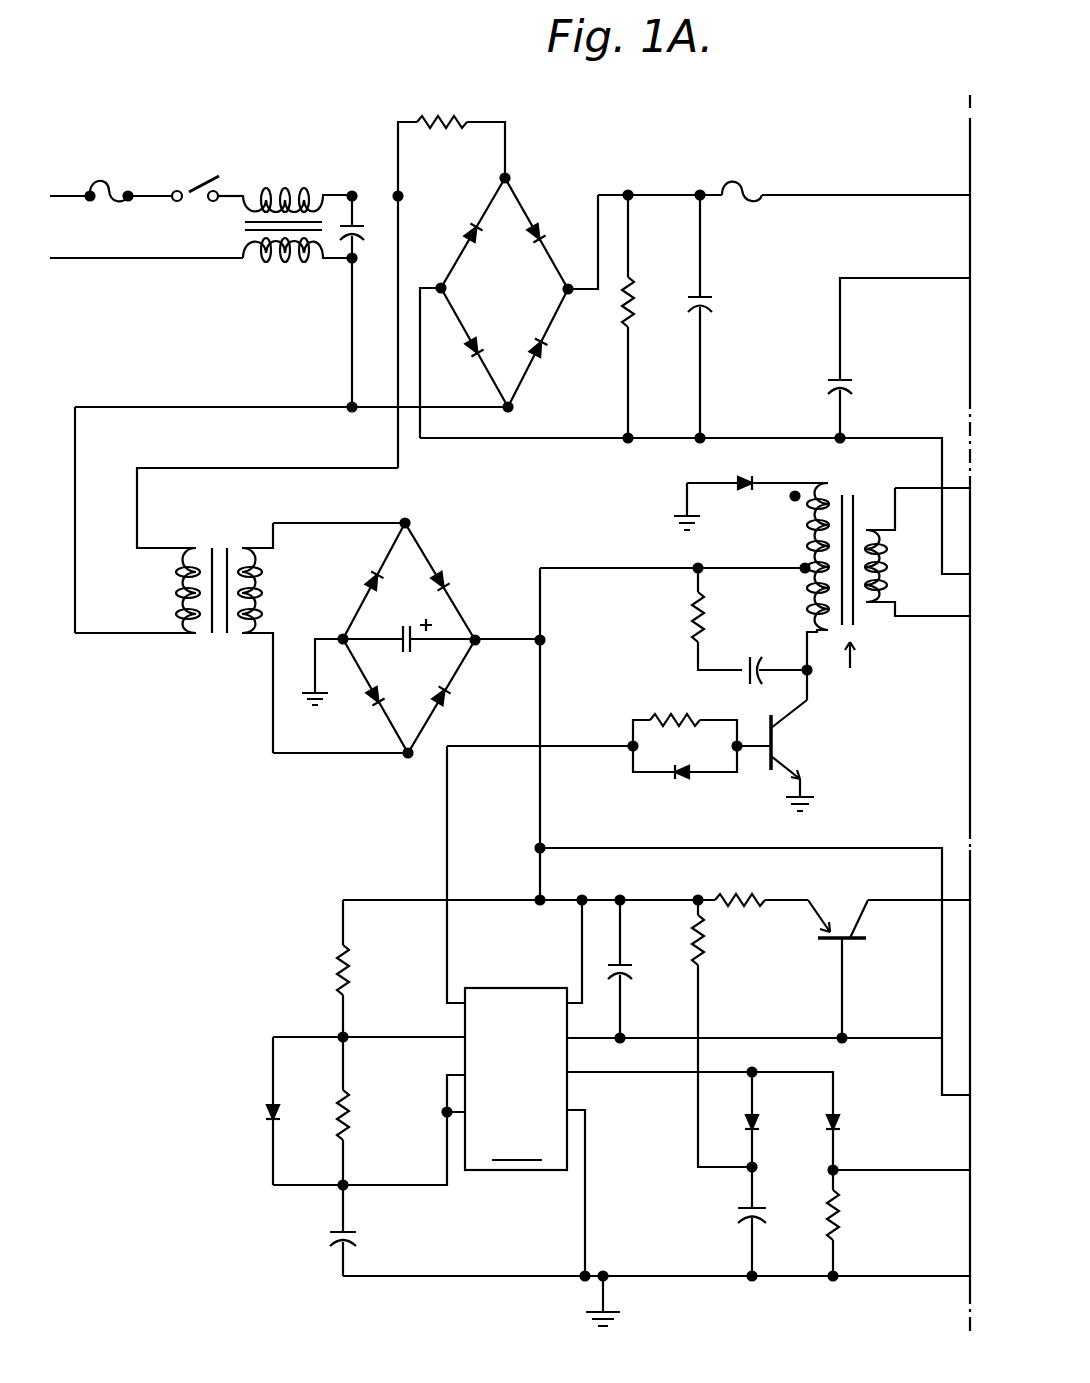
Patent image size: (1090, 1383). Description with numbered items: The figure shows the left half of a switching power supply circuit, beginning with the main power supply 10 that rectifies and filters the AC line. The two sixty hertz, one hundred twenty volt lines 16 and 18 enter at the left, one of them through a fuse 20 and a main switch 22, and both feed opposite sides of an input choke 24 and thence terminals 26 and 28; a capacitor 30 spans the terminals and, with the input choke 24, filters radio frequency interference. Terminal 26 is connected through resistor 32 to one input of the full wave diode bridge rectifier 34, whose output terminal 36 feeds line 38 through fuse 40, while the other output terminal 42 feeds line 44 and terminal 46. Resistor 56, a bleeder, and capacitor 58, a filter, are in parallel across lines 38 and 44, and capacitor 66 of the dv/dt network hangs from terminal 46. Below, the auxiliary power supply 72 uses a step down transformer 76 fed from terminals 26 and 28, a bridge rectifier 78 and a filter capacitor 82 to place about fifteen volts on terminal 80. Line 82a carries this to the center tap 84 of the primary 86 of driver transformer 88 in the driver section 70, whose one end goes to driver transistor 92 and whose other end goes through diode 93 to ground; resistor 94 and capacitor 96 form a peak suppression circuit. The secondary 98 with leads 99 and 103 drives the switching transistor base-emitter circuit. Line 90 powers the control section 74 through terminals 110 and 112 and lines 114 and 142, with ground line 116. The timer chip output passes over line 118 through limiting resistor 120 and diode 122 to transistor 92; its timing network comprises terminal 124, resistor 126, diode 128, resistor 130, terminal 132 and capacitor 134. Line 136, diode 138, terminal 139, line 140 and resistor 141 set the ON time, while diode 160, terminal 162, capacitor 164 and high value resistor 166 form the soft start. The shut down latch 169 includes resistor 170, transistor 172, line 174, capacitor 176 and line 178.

The main power supply 10 is at (567, 124).
The line 16 is at (150, 194).
The line 18 is at (118, 265).
The fuse 20 is at (114, 194).
The main switch 22 is at (197, 181).
The input choke 24 is at (277, 171).
The terminal 26 is at (396, 195).
The terminal 28 is at (351, 258).
The capacitor 30 is at (370, 267).
The resistor 32 is at (444, 125).
The full wave diode bridge rectifier 34 is at (492, 298).
The output terminal 36 is at (570, 300).
The line 38 is at (625, 195).
The fuse 40 is at (746, 192).
The output terminal 42 is at (441, 287).
The line 44 is at (491, 437).
The terminal 46 is at (840, 437).
The resistor 56 is at (646, 326).
The capacitor 58 is at (723, 299).
The capacitor 66 is at (812, 385).
The driver section 70 is at (646, 488).
The auxiliary power supply 72 is at (242, 716).
The control section 74 is at (488, 1218).
The step down transformer 76 is at (202, 638).
The full wave diode bridge rectifier 78 is at (465, 544).
The terminal 80 is at (540, 639).
The capacitor 82 is at (404, 666).
The line 82a is at (572, 568).
The center tap 84 is at (802, 568).
The primary 86 is at (819, 484).
The driver transformer 88 is at (862, 677).
The line 90 is at (538, 700).
The driver transistor 92 is at (790, 738).
The diode 93 is at (737, 485).
The resistor 94 is at (695, 618).
The capacitor 96 is at (766, 678).
The secondary 98 is at (886, 542).
The lead 99 is at (958, 481).
The lead 103 is at (936, 616).
The terminal 110 is at (542, 848).
The terminal 112 is at (544, 900).
The line 114 is at (558, 908).
The ground line 116 is at (446, 1276).
The line 118 is at (447, 810).
The limiting resistor 120 is at (658, 718).
The diode 122 is at (686, 773).
The terminal 124 is at (340, 1035).
The resistor 126 is at (340, 962).
The diode 128 is at (285, 1110).
The resistor 130 is at (348, 1122).
The terminal 132 is at (335, 1189).
The capacitor 134 is at (326, 1243).
The line 136 is at (627, 1075).
The diode 138 is at (840, 1124).
The terminal 139 is at (842, 1169).
The line 140 is at (903, 1177).
The resistor 141 is at (844, 1240).
The line 142 is at (638, 847).
The diode 160 is at (760, 1123).
The terminal 162 is at (760, 1166).
The capacitor 164 is at (768, 1224).
The high value resistor 166 is at (698, 973).
The shut down latch 169 is at (780, 993).
The resistor 170 is at (754, 906).
The transistor 172 is at (846, 913).
The line 174 is at (930, 1043).
The capacitor 176 is at (646, 982).
The line 178 is at (897, 911).